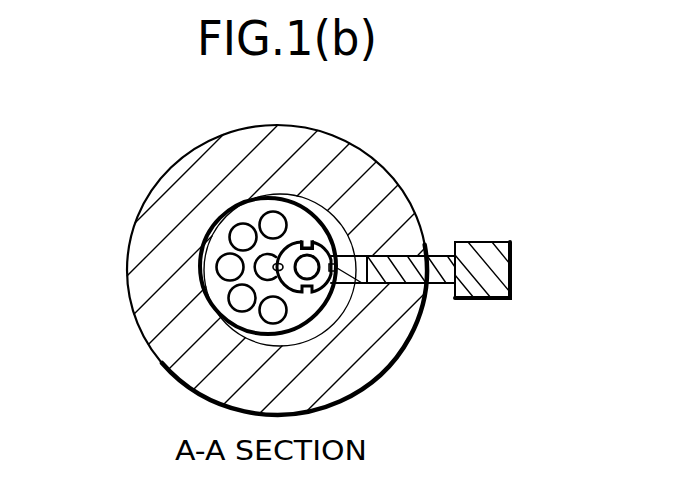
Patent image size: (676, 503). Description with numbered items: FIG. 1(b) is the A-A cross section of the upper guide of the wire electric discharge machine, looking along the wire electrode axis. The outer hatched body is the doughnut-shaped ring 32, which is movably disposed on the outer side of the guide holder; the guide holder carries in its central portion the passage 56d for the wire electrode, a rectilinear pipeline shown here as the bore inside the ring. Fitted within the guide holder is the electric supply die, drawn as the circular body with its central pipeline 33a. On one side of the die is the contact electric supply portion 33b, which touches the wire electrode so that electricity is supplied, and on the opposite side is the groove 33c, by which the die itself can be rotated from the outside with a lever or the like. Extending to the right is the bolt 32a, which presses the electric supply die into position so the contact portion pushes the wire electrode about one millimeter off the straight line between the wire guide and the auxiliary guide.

The doughnut-shaped ring 32 is at (163, 357).
The bolt 32a is at (510, 265).
The pipeline 33a is at (310, 262).
The contact electric supply portion 33b is at (305, 240).
The groove 33c is at (355, 287).
The passage 56d is at (205, 263).